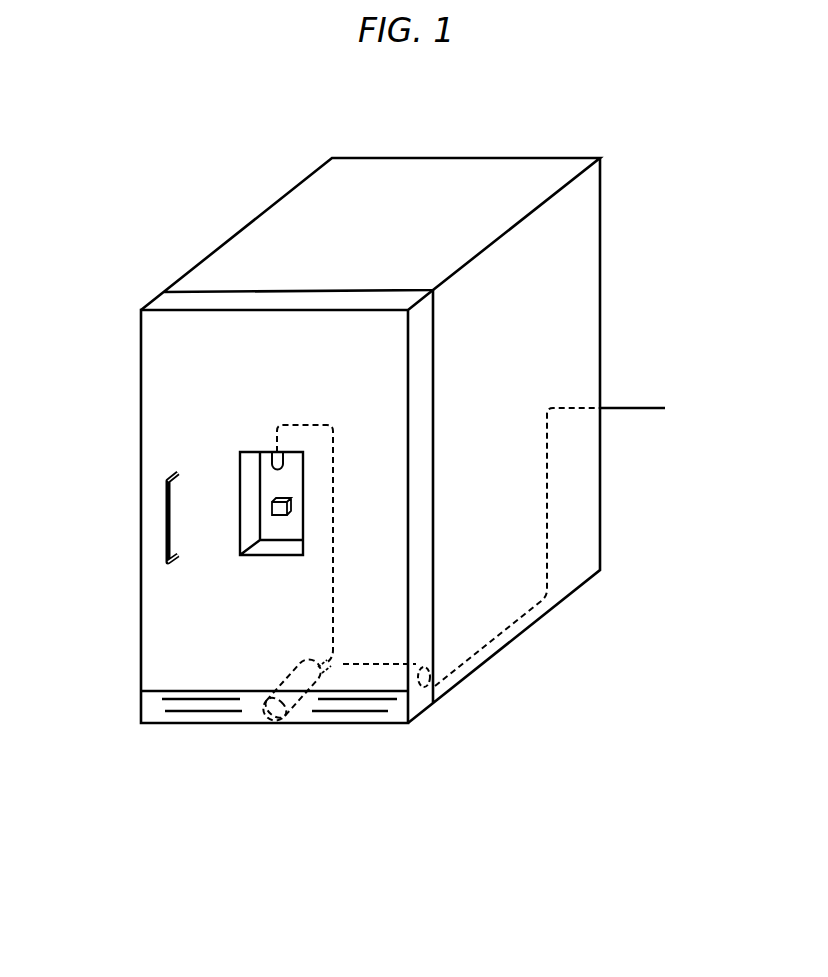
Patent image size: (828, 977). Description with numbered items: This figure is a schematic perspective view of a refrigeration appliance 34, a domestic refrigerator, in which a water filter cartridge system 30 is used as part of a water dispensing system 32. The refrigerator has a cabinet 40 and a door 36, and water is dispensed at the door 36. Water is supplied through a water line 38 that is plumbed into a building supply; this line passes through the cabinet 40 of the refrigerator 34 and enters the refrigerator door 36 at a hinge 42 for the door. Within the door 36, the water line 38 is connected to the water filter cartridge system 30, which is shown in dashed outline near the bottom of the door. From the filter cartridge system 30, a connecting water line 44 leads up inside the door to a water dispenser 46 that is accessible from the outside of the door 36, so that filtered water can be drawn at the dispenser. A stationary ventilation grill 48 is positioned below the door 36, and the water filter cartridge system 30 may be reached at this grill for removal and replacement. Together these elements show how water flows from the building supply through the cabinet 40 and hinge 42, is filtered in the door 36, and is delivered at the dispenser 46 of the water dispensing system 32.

The water filter cartridge system 30 is at (260, 720).
The water dispensing system 32 is at (218, 448).
The refrigeration appliance 34 is at (228, 248).
The door 36 is at (160, 602).
The water line 38 is at (648, 408).
The cabinet 40 is at (582, 342).
The hinge 42 is at (422, 690).
The connecting water line 44 is at (283, 423).
The water dispenser 46 is at (265, 488).
The stationary ventilation grill 48 is at (153, 708).